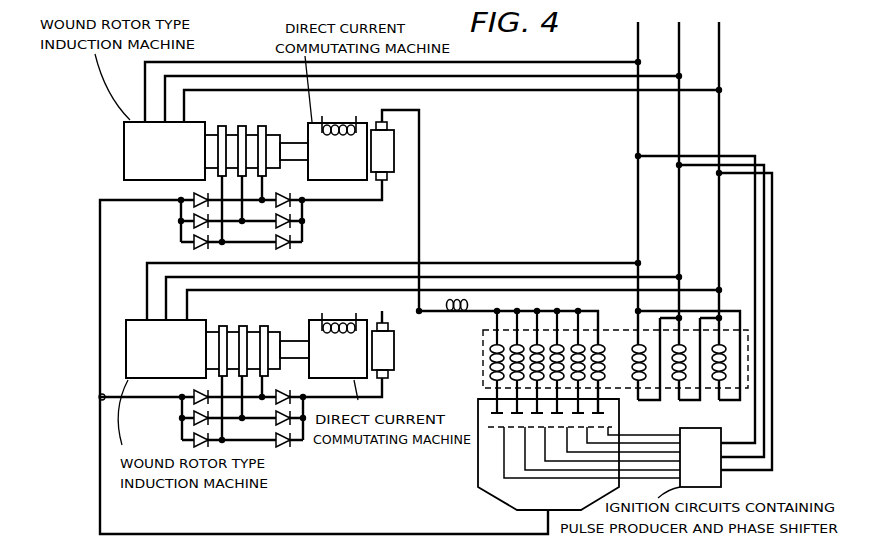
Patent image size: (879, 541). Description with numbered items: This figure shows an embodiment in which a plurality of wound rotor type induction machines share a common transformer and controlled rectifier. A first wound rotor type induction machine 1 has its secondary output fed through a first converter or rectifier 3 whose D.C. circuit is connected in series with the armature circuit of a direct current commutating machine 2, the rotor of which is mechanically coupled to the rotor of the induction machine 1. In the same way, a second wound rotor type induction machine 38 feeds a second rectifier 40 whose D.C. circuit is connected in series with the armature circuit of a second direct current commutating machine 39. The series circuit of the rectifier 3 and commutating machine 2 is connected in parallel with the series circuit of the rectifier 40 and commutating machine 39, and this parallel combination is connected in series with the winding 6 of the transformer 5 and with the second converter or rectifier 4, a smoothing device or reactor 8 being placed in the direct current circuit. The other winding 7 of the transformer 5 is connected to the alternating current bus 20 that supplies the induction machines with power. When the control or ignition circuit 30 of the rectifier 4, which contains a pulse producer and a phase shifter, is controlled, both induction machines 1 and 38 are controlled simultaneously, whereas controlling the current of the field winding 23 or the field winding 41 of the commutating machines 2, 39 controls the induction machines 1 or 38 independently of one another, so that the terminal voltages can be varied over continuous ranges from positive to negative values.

The wound rotor type induction machine 1 is at (216, 151).
The direct current commutating machine 2 is at (351, 151).
The first converter 3 is at (303, 222).
The second converter 4 is at (477, 472).
The transformer 5 is at (633, 331).
The winding 6 is at (490, 361).
The other winding 7 is at (672, 381).
The smoothing device 8 is at (455, 311).
The alternating current bus 20 is at (719, 237).
The field winding 23 is at (338, 126).
The control (ignition) circuit 30 is at (700, 457).
The wound rotor type induction machine 38 is at (217, 349).
The direct current commutating machine 39 is at (351, 349).
The converter or rectifier 40 is at (284, 447).
The field winding 41 is at (340, 324).